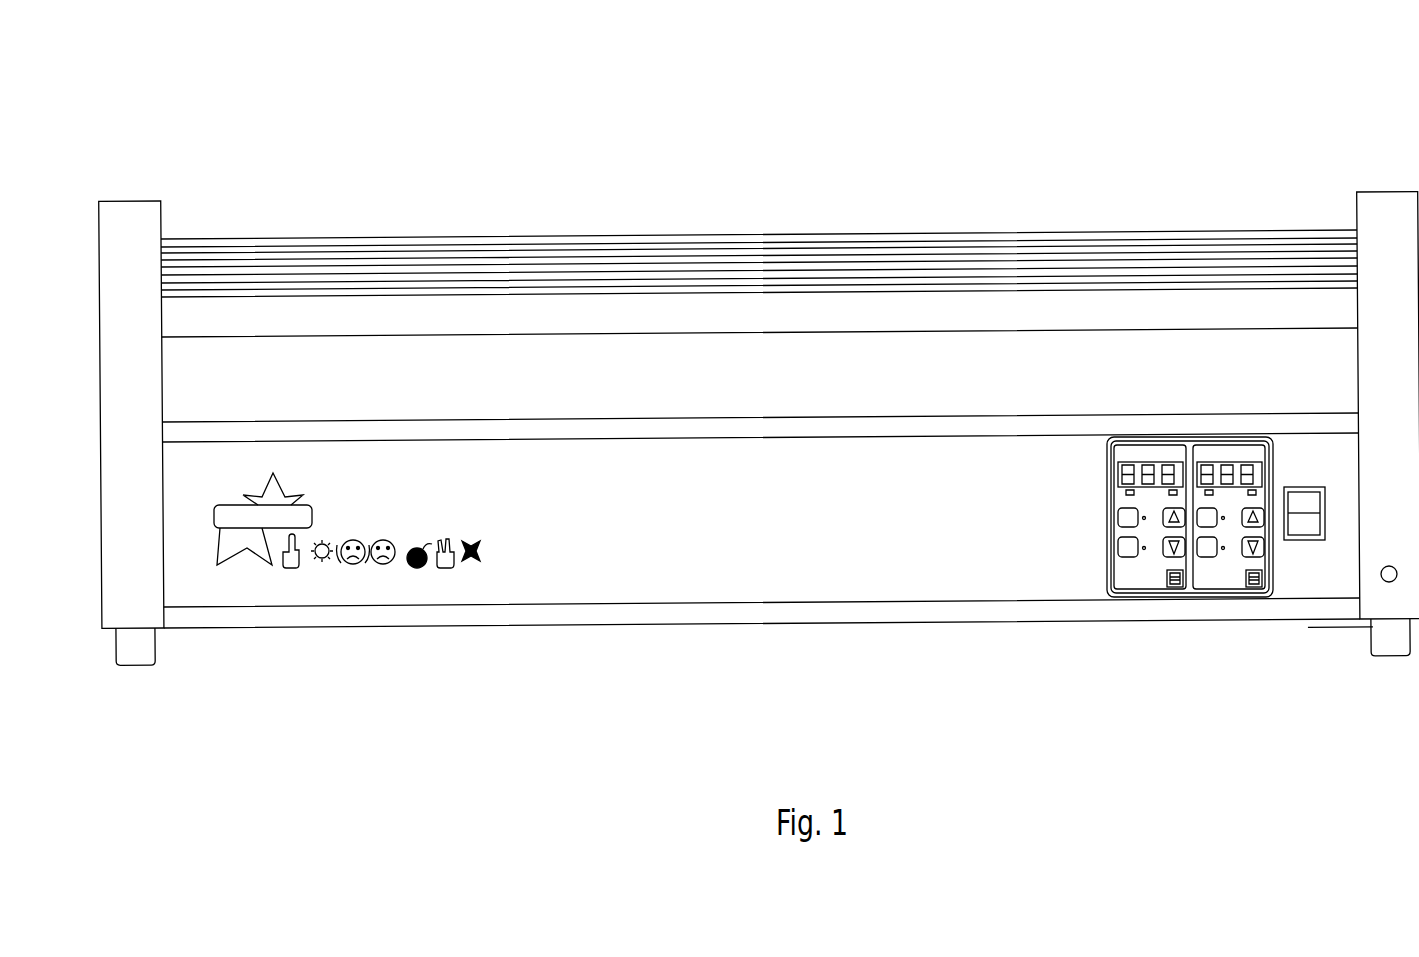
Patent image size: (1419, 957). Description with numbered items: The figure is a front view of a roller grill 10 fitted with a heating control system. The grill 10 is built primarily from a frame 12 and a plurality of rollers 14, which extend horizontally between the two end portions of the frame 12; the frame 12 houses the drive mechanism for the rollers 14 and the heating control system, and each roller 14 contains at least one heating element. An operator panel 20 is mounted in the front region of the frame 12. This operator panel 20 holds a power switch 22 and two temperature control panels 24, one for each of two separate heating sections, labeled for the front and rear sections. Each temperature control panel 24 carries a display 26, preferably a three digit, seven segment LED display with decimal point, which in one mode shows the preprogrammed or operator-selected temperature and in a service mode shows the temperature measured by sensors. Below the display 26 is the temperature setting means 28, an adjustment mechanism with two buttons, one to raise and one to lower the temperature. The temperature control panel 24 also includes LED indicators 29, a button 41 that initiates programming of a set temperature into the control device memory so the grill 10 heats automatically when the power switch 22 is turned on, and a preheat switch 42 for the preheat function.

The roller grill 10 is at (920, 155).
The frame 12 is at (165, 203).
The rollers 14 is at (507, 233).
The operator panel 20 is at (1087, 530).
The power switch 22 is at (1312, 543).
The temperature control panel 24 is at (1103, 567).
The display 26 is at (1115, 478).
The temperature setting means 28 is at (1250, 560).
The LED indicators 29 is at (1225, 555).
The button 41 is at (1208, 562).
The preheat switch 42 is at (1115, 530).